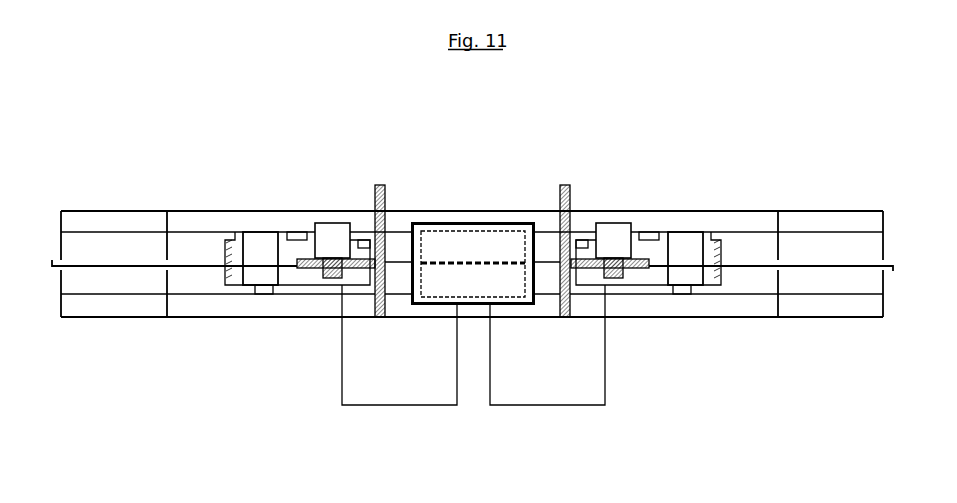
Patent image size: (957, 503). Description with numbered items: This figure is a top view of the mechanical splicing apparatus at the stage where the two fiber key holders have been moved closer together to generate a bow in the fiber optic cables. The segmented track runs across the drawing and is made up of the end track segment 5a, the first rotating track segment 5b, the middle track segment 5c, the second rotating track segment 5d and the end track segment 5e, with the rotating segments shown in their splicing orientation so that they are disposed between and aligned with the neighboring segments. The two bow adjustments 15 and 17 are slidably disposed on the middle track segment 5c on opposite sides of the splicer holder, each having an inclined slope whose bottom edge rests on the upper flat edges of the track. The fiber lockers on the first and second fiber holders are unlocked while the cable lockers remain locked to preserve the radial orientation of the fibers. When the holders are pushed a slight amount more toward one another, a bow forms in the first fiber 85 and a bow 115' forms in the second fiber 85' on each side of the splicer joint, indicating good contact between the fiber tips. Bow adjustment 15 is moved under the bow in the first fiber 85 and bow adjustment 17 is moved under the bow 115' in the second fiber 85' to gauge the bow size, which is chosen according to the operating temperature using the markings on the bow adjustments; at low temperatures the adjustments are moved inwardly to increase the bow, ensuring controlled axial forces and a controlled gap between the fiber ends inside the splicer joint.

The end track segment 5a is at (127, 211).
The first rotating track segment 5b is at (231, 211).
The middle track segment 5c is at (462, 210).
The second rotating track segment 5d is at (688, 211).
The end track segment 5e is at (830, 211).
The bow adjustment 15 is at (378, 183).
The bow adjustment 17 is at (567, 185).
The first fiber 85 is at (400, 365).
The second fiber 85' is at (547, 363).
The bow 115' is at (610, 171).